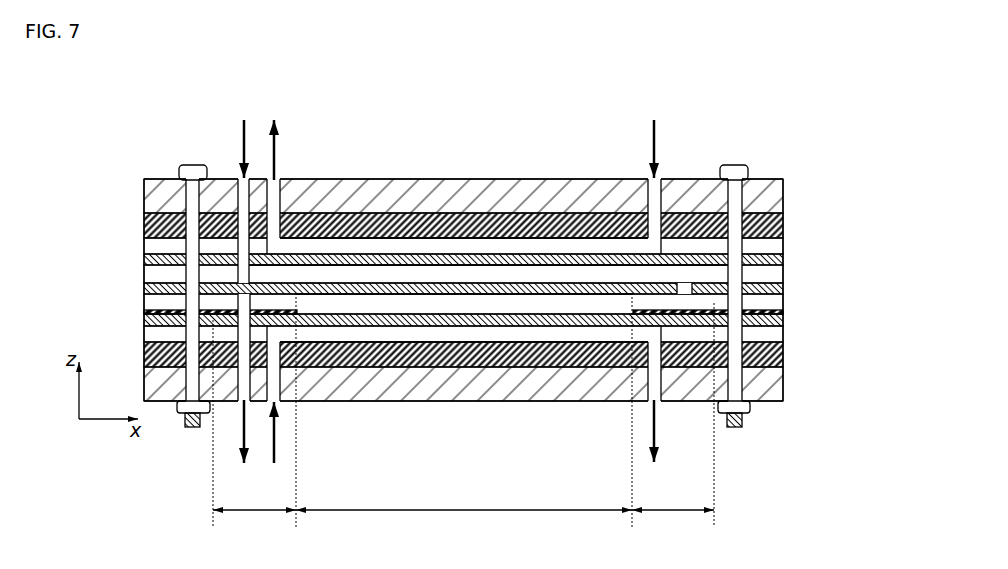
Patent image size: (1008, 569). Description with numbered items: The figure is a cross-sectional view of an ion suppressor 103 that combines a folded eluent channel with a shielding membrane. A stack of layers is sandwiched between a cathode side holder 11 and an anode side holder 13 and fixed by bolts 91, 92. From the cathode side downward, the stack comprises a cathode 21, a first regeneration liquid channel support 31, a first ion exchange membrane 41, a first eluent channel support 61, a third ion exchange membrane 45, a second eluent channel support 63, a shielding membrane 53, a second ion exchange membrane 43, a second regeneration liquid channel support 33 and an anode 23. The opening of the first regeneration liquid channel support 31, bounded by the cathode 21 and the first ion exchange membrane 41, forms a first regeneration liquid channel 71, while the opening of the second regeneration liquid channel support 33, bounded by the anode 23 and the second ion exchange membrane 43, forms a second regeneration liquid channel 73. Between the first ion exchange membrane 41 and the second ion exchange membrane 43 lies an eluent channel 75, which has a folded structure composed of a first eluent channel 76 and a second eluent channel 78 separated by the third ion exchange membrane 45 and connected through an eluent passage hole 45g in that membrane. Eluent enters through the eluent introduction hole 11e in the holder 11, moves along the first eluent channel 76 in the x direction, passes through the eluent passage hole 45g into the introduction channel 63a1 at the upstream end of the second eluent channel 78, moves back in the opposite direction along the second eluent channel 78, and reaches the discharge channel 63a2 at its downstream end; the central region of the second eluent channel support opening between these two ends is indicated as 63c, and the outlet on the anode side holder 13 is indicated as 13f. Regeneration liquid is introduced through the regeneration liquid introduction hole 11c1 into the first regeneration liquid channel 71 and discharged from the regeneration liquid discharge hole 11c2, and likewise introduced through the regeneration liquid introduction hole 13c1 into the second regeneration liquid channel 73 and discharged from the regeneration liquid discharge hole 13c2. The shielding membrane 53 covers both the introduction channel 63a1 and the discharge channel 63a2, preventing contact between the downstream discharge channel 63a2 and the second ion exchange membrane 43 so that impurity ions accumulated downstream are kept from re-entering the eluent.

The ion suppressor 103 is at (118, 177).
The cathode side holder 11 is at (783, 195).
The cathode 21 is at (783, 222).
The first regeneration liquid channel support 31 is at (783, 250).
The first ion exchange membrane 41 is at (783, 262).
The first eluent channel support 61 is at (783, 274).
The third ion exchange membrane 45 is at (783, 288).
The second eluent channel support 63 is at (783, 302).
The shielding membrane 53 is at (783, 312).
The second ion exchange membrane 43 is at (783, 320).
The second regeneration liquid channel support 33 is at (783, 334).
The anode 23 is at (783, 355).
The anode side holder 13 is at (783, 387).
The bolt 91 is at (194, 170).
The bolt 92 is at (741, 168).
The eluent introduction hole 11e is at (237, 151).
The regeneration liquid discharge hole 11c2 is at (325, 177).
The regeneration liquid introduction hole 11c1 is at (642, 177).
The outlet channel in second end plate 13f is at (238, 435).
The regeneration liquid introduction hole 13c1 is at (323, 425).
The regeneration liquid discharge hole 13c2 is at (642, 423).
The first regeneration liquid channel 71 is at (418, 248).
The eluent channel 75 is at (620, 118).
The second eluent channel 78 is at (427, 297).
The first eluent channel 76 is at (477, 272).
The second regeneration liquid channel 73 is at (420, 340).
The eluent passage hole 45g is at (682, 297).
The discharge channel 63a2 is at (254, 414).
The central region width of cathode 63c is at (464, 414).
The introduction channel 63a1 is at (673, 419).